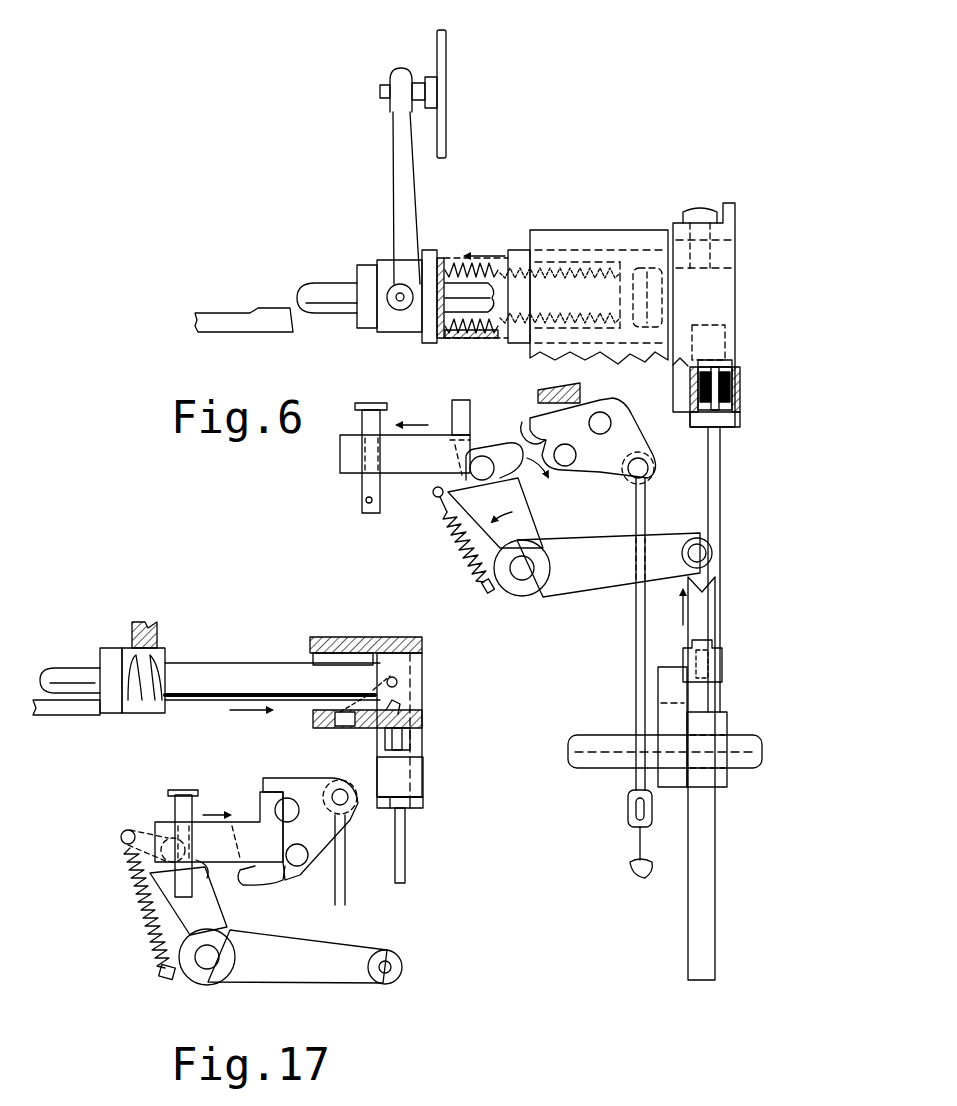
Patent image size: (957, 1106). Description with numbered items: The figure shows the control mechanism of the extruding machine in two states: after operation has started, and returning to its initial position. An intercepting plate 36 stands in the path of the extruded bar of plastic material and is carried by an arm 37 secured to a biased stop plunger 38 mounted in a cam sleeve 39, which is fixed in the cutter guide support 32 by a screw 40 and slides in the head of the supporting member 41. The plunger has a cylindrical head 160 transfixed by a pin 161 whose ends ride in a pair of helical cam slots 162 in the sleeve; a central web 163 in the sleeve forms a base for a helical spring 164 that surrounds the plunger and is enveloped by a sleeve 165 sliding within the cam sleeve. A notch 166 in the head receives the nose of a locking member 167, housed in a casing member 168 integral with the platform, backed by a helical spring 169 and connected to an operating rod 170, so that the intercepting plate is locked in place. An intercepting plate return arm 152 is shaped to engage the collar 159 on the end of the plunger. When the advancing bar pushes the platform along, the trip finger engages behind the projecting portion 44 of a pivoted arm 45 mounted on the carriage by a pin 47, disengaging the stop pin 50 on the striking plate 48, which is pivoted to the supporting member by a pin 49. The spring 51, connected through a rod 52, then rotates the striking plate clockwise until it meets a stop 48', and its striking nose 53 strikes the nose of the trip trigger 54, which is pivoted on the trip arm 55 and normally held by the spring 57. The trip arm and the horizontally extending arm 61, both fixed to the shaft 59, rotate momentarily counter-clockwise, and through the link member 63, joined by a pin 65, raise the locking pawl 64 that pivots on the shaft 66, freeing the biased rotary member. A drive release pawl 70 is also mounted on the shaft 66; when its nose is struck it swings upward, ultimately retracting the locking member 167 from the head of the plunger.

In FIG. 6, the cutter guide support 32 is at (728, 240).
In FIG. 6, the intercepting plate 36 is at (447, 58).
In FIG. 6, the arm 37 is at (401, 183).
In FIG. 17, the arm 37 is at (147, 622).
In FIG. 6, the stop plunger 38 is at (342, 287).
In FIG. 17, the stop plunger 38 is at (60, 668).
In FIG. 6, the cam sleeve 39 is at (517, 250).
In FIG. 17, the cam sleeve 39 is at (360, 637).
In FIG. 6, the screw 40 is at (705, 212).
In FIG. 6, the supporting member 41 is at (600, 245).
In FIG. 6, the projecting portion 44 is at (466, 403).
In FIG. 6, the pivoted arm 45 is at (445, 440).
In FIG. 17, the pivoted arm 45 is at (240, 828).
In FIG. 6, the pin 47 is at (368, 404).
In FIG. 17, the pin 47 is at (183, 795).
In FIG. 6, the striking plate 48 is at (597, 440).
In FIG. 17, the striking plate 48 is at (310, 808).
In FIG. 6, the stop 48' is at (580, 383).
In FIG. 6, the pin 49 is at (604, 418).
In FIG. 17, the pin 49 is at (287, 804).
In FIG. 6, the stop pin 50 is at (566, 467).
In FIG. 17, the stop pin 50 is at (297, 867).
In FIG. 6, the spring 51 is at (633, 879).
In FIG. 6, the rod 52 is at (636, 668).
In FIG. 17, the rod 52 is at (347, 902).
In FIG. 6, the striking nose 53 is at (532, 420).
In FIG. 17, the striking nose 53 is at (256, 883).
In FIG. 6, the trip trigger 54 is at (506, 448).
In FIG. 17, the trip trigger 54 is at (146, 840).
In FIG. 6, the trip arm 55 is at (462, 528).
In FIG. 17, the trip arm 55 is at (180, 908).
In FIG. 17, the spring 57 is at (152, 942).
In FIG. 6, the shaft 59 is at (519, 582).
In FIG. 17, the shaft 59 is at (205, 972).
In FIG. 6, the horizontally extending arm 61 is at (598, 572).
In FIG. 17, the horizontally extending arm 61 is at (258, 968).
In FIG. 6, the link member 63 is at (712, 614).
In FIG. 6, the locking pawl 64 is at (708, 702).
In FIG. 6, the pin 65 is at (722, 661).
In FIG. 6, the shaft 66 is at (748, 752).
In FIG. 6, the drive release pawl 70 is at (666, 713).
In FIG. 6, the intercepting plate return arm 152 is at (217, 312).
In FIG. 17, the intercepting plate return arm 152 is at (45, 716).
In FIG. 17, the collar 159 is at (108, 650).
In FIG. 17, the cylindrical head 160 is at (400, 668).
In FIG. 17, the pin 161 is at (398, 683).
In FIG. 17, the helical cam slots 162 is at (340, 637).
In FIG. 6, the web 163 is at (625, 262).
In FIG. 6, the helical spring 164 is at (462, 266).
In FIG. 6, the sleeve 165 is at (446, 262).
In FIG. 17, the notch 166 is at (400, 710).
In FIG. 6, the locking member 167 is at (735, 362).
In FIG. 17, the locking member 167 is at (412, 740).
In FIG. 17, the casing member 168 is at (415, 776).
In FIG. 6, the helical spring 169 is at (745, 385).
In FIG. 6, the operating rod 170 is at (722, 493).
In FIG. 17, the operating rod 170 is at (407, 853).